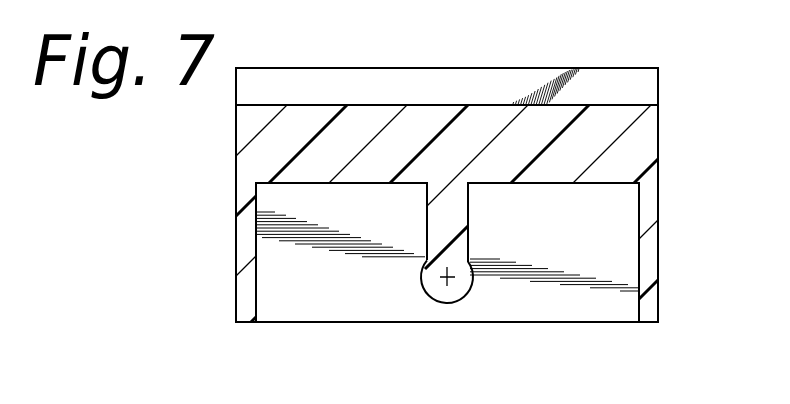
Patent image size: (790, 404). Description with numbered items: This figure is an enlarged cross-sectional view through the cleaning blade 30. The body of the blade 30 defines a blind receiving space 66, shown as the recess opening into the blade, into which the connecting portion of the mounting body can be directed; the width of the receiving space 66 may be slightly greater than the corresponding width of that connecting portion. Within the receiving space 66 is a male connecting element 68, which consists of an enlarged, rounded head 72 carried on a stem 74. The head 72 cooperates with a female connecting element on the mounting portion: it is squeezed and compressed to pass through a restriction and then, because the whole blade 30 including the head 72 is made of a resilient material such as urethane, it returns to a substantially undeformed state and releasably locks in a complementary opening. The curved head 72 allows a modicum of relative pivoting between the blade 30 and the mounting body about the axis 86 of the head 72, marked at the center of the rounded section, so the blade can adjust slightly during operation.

The cleaning blade 30 is at (659, 132).
The blind receiving space 66 is at (627, 230).
The male connecting element 68 is at (475, 260).
The stem 74 is at (468, 213).
The head 72 is at (431, 300).
The axis 86 is at (446, 277).